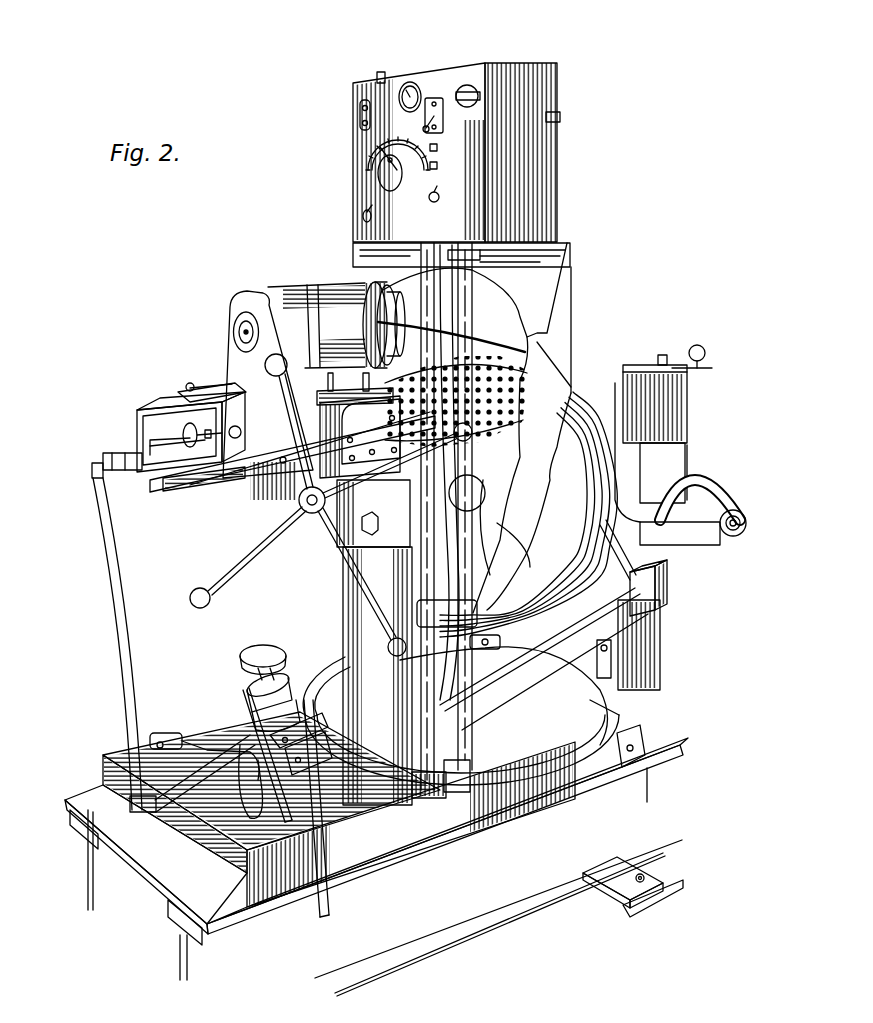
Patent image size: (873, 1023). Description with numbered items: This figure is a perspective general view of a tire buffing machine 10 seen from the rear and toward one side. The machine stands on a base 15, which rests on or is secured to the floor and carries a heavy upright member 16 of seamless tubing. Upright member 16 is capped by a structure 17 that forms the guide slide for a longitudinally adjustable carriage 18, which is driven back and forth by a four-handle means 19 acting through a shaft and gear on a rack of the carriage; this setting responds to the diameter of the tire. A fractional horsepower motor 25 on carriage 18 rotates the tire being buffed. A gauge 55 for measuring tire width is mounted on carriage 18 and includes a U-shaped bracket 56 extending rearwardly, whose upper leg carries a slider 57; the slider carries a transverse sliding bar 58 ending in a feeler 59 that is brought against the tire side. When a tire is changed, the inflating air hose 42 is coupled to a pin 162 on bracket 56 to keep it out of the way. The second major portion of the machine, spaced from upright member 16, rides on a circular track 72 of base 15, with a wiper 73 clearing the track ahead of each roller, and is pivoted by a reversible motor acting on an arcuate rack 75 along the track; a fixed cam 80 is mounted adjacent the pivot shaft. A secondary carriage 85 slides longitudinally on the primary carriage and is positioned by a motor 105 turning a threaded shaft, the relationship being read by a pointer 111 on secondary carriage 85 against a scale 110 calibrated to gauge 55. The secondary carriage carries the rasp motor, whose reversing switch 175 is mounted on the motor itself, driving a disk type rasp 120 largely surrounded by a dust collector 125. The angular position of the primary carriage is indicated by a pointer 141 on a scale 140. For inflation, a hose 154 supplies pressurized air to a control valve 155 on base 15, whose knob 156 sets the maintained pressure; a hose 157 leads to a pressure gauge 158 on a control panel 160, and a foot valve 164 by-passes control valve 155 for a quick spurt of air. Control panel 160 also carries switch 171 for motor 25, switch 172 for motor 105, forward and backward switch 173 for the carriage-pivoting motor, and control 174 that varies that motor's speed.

The support bar 10 is at (642, 637).
The base 15 is at (103, 769).
The upright member 16 is at (342, 598).
The structure 17 is at (245, 500).
The carriage 18 is at (178, 484).
The four-handle means 19 is at (222, 585).
The motor 25 is at (338, 282).
The air hose 42 is at (115, 637).
The gauge 55 is at (175, 378).
The U-shaped bracket 56 is at (137, 420).
The slider 57 is at (227, 383).
The transverse sliding bar 58 is at (203, 387).
The feeler 59 is at (186, 387).
The circular track 72 is at (620, 706).
The wiper 73 is at (608, 681).
The arcuate rack 75 is at (624, 716).
The fixed cam 80 is at (482, 660).
The secondary carriage 85 is at (648, 505).
The motor 105 is at (693, 488).
The scale 110 is at (655, 557).
The pointer 111 is at (605, 530).
The disk type rasp 120 is at (517, 396).
The dust collector 125 is at (557, 343).
The scale 140 is at (372, 163).
The pointer 141 is at (378, 146).
The hose 154 is at (328, 902).
The control valve 155 is at (237, 690).
The knob 156 is at (270, 648).
The hose 157 is at (358, 748).
The pressure gauge 158 is at (417, 83).
The control panel 160 is at (393, 80).
The pin 162 is at (130, 450).
The foot valve 164 is at (196, 712).
The switch 171 is at (362, 216).
The switch 172 is at (478, 84).
The forward and backward switch 173 is at (432, 202).
The control 174 is at (440, 102).
The reversing switch 175 is at (703, 347).